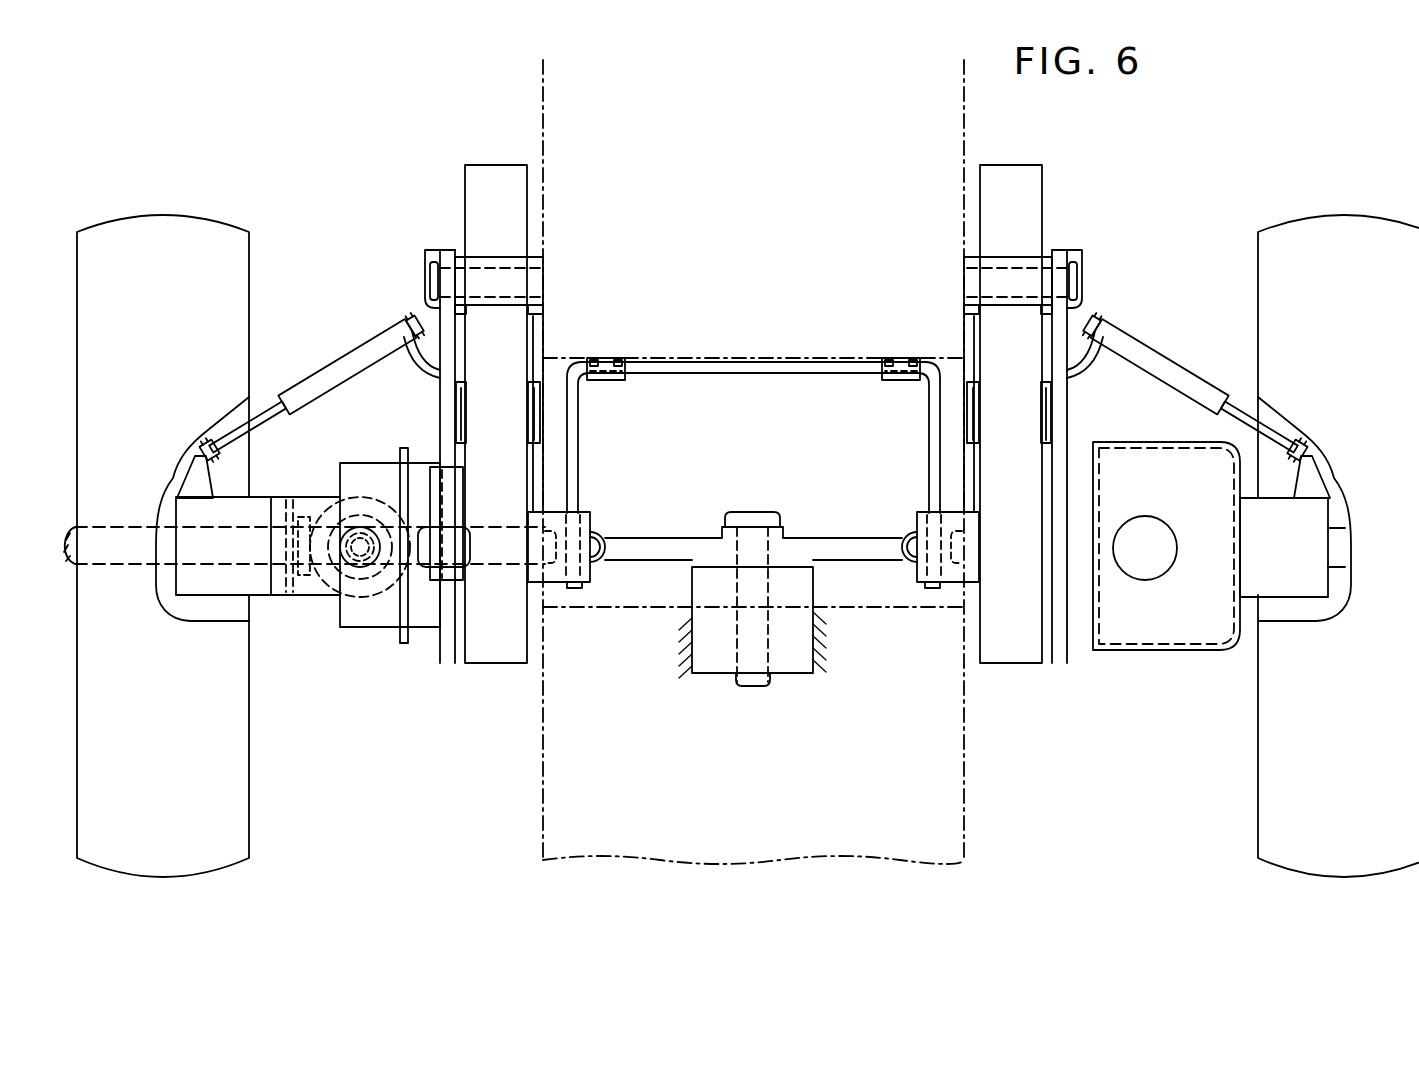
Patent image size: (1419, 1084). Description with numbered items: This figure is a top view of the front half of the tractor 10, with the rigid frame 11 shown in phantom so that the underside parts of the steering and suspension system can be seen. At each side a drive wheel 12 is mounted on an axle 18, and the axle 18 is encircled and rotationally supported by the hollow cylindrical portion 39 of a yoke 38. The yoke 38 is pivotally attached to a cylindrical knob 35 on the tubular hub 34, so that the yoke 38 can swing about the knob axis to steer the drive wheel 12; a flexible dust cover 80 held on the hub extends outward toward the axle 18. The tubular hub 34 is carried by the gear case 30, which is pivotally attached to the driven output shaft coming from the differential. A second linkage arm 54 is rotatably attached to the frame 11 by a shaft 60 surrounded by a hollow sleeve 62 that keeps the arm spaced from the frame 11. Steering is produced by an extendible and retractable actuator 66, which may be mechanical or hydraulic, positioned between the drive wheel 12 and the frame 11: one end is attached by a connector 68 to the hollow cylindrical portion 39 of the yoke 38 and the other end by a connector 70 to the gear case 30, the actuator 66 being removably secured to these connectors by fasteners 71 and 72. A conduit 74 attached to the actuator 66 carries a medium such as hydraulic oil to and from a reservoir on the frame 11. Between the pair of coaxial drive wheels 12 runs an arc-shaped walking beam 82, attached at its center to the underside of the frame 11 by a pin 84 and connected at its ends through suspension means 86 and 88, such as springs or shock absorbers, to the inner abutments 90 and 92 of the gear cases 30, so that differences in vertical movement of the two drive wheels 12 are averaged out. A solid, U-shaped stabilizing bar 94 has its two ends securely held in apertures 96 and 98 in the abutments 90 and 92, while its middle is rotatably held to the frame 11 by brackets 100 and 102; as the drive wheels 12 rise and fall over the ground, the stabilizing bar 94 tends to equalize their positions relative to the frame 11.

The tractor 10 is at (1130, 152).
The frame 11 is at (545, 768).
The drive wheels 12 is at (224, 233).
The axle 18 is at (130, 568).
The gear case 30 is at (488, 168).
The tubular hub 34 is at (388, 649).
The cylindrical knob 35 is at (362, 520).
The yoke 38 is at (277, 489).
The hollow cylindrical portion 39 is at (192, 520).
The second linkage arm 54 is at (440, 393).
The shaft 60 is at (497, 268).
The hollow sleeve 62 is at (485, 265).
The actuator 66 is at (312, 388).
The connector 68 is at (196, 490).
The connector 70 is at (423, 270).
The fastener 71 is at (206, 440).
The fastener 72 is at (410, 318).
The conduit 74 is at (420, 363).
The dust cover 80 is at (1134, 440).
The walking beam 82 is at (803, 540).
The pin 84 is at (772, 627).
The suspension means 86 is at (601, 534).
The suspension means 88 is at (906, 540).
The inner abutment 90 is at (556, 575).
The inner abutment 92 is at (950, 580).
The stabilizing bar 94 is at (766, 362).
The aperture 96 is at (579, 525).
The aperture 98 is at (935, 540).
The bracket 100 is at (611, 357).
The bracket 102 is at (898, 357).